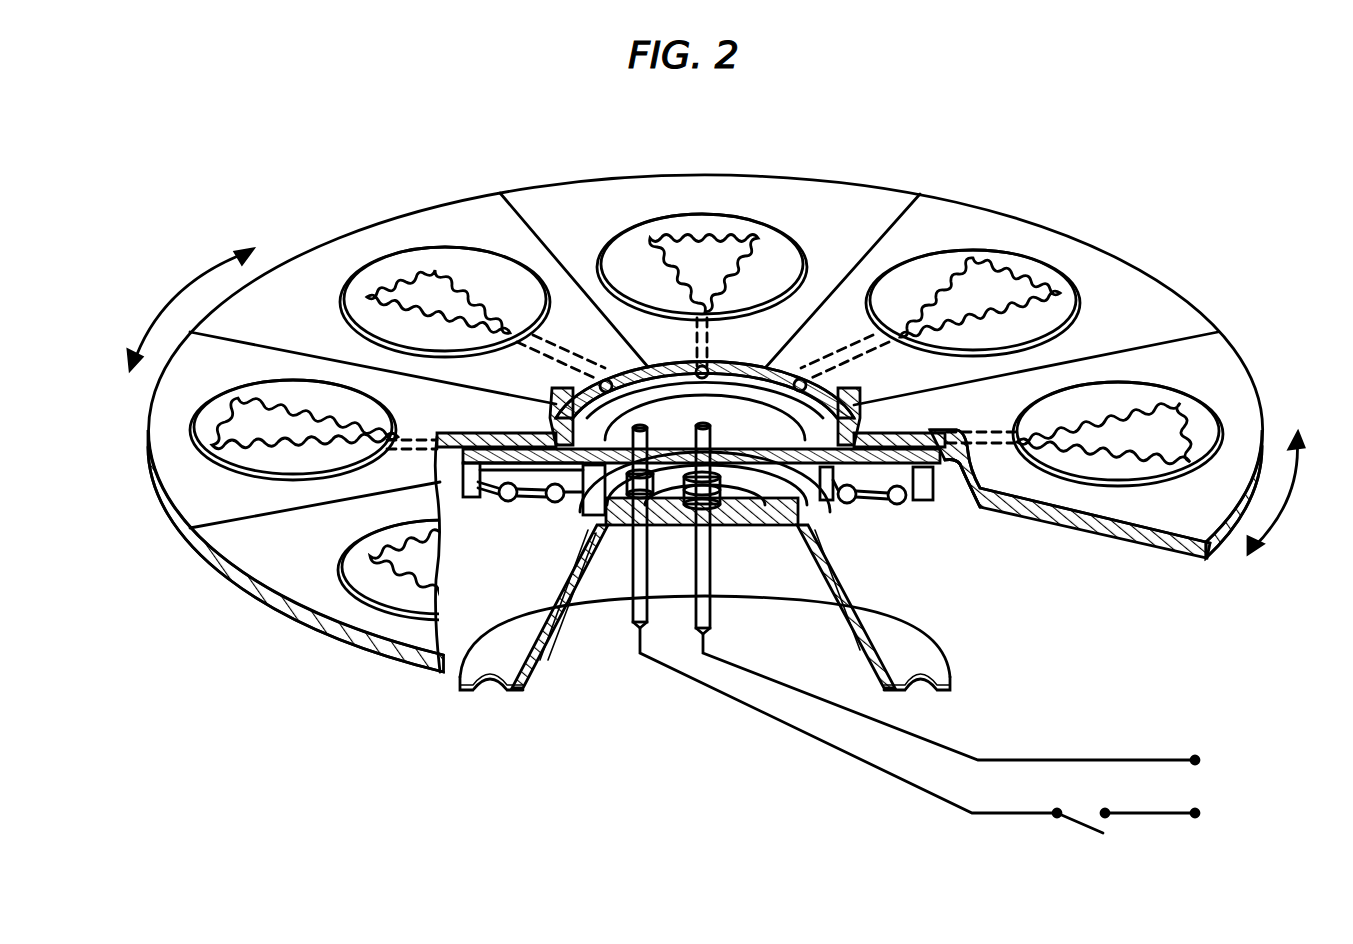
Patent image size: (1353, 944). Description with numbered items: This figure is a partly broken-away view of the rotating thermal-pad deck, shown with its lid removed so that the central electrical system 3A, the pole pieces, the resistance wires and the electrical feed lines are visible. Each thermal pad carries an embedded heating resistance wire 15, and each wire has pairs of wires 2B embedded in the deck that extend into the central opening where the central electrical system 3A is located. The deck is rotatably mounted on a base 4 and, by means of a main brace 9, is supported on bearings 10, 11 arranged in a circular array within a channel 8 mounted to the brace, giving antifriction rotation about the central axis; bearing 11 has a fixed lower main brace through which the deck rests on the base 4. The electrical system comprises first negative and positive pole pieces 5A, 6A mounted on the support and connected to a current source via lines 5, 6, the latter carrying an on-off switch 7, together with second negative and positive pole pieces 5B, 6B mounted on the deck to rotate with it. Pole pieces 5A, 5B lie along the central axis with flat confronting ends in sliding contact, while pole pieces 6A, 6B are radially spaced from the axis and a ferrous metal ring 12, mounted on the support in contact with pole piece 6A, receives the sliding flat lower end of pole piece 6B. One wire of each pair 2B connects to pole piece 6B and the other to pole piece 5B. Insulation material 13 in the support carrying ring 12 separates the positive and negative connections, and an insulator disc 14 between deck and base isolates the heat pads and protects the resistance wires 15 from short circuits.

The heating resistance wire 15 is at (413, 277).
The pairs of wires 2B is at (435, 435).
The central electrical system 3A is at (727, 415).
The second negative pole piece 5B is at (697, 371).
The second positive pole piece 6B is at (600, 393).
The bearing 11 is at (555, 485).
The channel 8 is at (475, 485).
The main brace 9 is at (508, 500).
The bearing 10 is at (535, 500).
The insulation material 13 is at (740, 520).
The ferrous metal ring 12 is at (800, 563).
The insulator disc 14 is at (940, 470).
The first positive pole piece 6A is at (628, 592).
The first negative pole piece 5A is at (711, 608).
The base 4 is at (472, 667).
The line 5 is at (1065, 760).
The line 6 is at (1018, 815).
The on-off switch 7 is at (1092, 832).